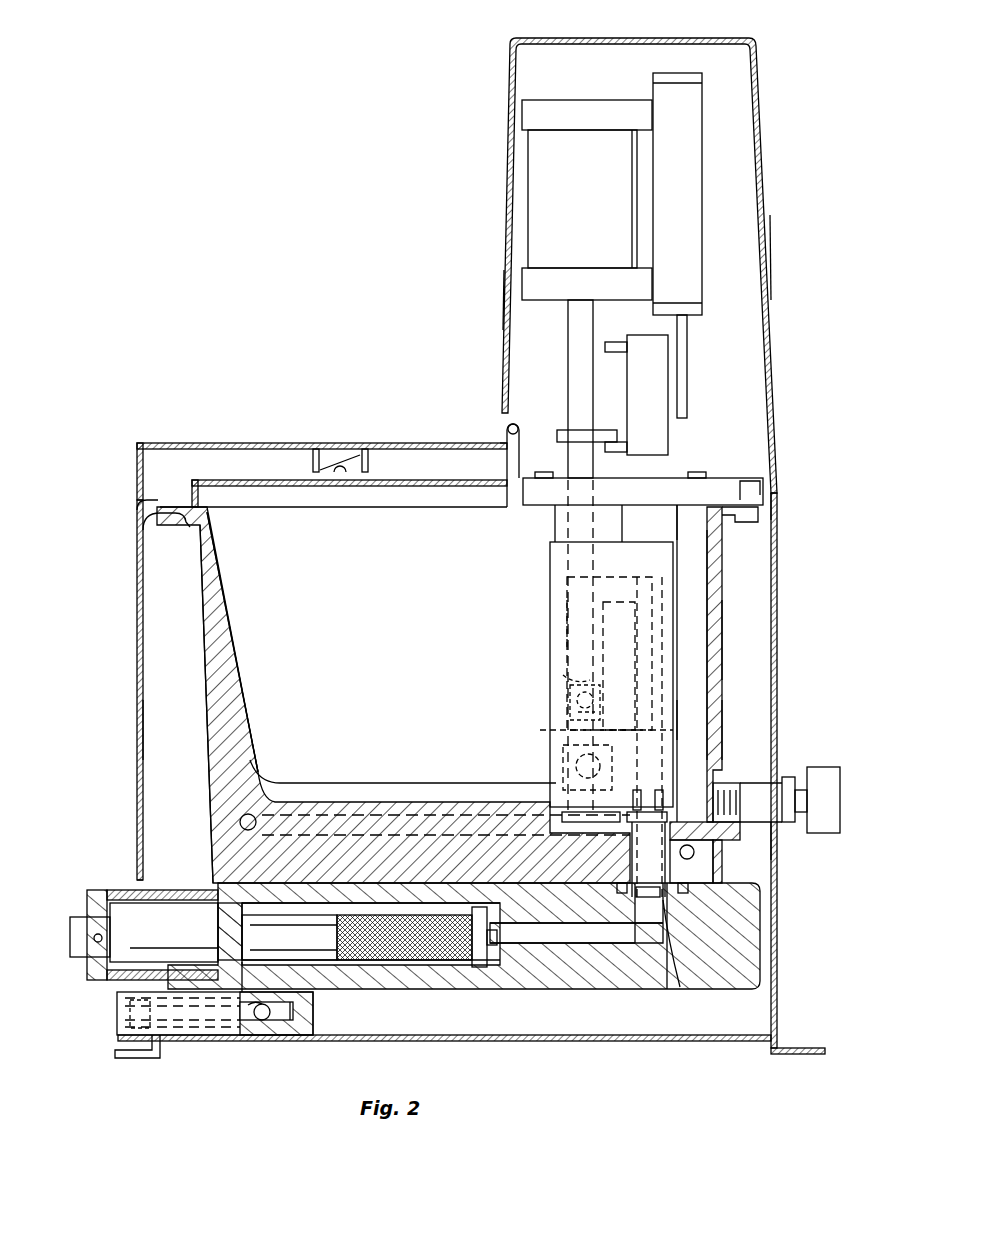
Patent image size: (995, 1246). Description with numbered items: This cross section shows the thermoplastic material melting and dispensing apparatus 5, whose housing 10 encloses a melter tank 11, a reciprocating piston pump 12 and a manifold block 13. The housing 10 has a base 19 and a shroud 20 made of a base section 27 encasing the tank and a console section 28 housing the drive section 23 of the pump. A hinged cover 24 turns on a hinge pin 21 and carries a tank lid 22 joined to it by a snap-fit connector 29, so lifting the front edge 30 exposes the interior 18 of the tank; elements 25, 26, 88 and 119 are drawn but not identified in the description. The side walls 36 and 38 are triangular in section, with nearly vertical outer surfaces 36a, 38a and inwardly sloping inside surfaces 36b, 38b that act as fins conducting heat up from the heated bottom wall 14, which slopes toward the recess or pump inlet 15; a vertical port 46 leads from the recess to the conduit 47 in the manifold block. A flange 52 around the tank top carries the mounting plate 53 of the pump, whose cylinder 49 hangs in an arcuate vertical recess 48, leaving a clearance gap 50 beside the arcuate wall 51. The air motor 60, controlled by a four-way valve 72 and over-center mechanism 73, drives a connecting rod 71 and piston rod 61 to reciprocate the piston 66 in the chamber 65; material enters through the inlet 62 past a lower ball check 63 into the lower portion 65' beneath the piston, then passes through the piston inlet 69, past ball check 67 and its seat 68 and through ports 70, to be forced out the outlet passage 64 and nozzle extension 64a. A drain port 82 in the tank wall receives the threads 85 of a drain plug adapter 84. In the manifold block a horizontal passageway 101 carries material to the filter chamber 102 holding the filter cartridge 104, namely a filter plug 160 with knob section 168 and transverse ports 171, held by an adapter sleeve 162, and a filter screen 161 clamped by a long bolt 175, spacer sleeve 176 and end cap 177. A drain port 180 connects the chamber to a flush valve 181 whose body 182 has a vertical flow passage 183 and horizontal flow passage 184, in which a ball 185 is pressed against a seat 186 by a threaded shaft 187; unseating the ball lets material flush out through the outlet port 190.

The thermoplastic material melting and dispensing apparatus 5 is at (222, 276).
The housing 10 is at (136, 607).
The melter tank 11 is at (196, 759).
The reciprocating piston pump 12 is at (515, 674).
The manifold block 13 is at (581, 990).
The bottom wall 14 is at (398, 802).
The pump inlet recess 15 is at (75, 972).
The tank interior 18 is at (406, 621).
The base 19 is at (588, 1042).
The shroud 20 is at (787, 473).
The hinge pin 21 is at (514, 422).
The tank lid 22 is at (420, 508).
The drive section 23 is at (632, 62).
The hinged cover 24 is at (258, 442).
The latch 25 is at (503, 425).
The hood front wall 26 is at (503, 275).
The base section 27 is at (778, 582).
The console section 28 is at (770, 216).
The snap-fit connector 29 is at (348, 460).
The front edge 30 is at (137, 462).
The side wall 36 is at (227, 673).
The outer surface 36a is at (203, 705).
The inside surface 36b is at (245, 679).
The side wall 38 is at (730, 549).
The outer surface 38a is at (727, 627).
The inside surface 38b is at (672, 530).
The vertical port 46 is at (672, 871).
The conduit 47 is at (683, 979).
The vertical recess 48 is at (716, 707).
The cylinder 49 is at (550, 599).
The clearance gap 50 is at (690, 692).
The arcuate vertical wall 51 is at (713, 722).
The flange 52 is at (150, 530).
The mounting plate 53 is at (705, 482).
The air motor 60 is at (594, 206).
The piston rod 61 is at (556, 526).
The pump inlet 62 is at (585, 812).
The ball check 63 is at (563, 768).
The outlet passage 64 is at (655, 574).
The nozzle extension 64a is at (653, 935).
The chamber 65 is at (532, 625).
The lower chamber portion 65' is at (589, 731).
The piston 66 is at (568, 702).
The ball check 67 is at (606, 686).
The seat 68 is at (607, 714).
The piston inlet 69 is at (680, 720).
The ports 70 is at (563, 676).
The connecting rod 71 is at (580, 343).
The four-way valve 72 is at (690, 197).
The over-center mechanism 73 is at (655, 383).
The drain port 82 is at (721, 784).
The drain plug adapter 84 is at (760, 788).
The threads 85 is at (773, 845).
The cap 88 is at (820, 782).
The horizontal passageway 101 is at (603, 934).
The filter chamber 102 is at (357, 976).
The filter cartridge 104 is at (413, 967).
The gasket 119 is at (553, 469).
The filter plug 160 is at (202, 890).
The filter screen 161 is at (404, 937).
The adapter sleeve 162 is at (160, 880).
The knob section 168 is at (97, 888).
The transverse ports 171 is at (182, 909).
The long bolt 175 is at (493, 938).
The spacer sleeve 176 is at (294, 937).
The end cap 177 is at (533, 970).
The drain port 180 is at (293, 978).
The flush valve 181 is at (215, 1047).
The flush valve body 182 is at (302, 1040).
The vertical flow passage 183 is at (293, 1012).
The horizontal flow passage 184 is at (193, 1023).
The ball 185 is at (255, 1038).
The seat 186 is at (266, 1040).
The threaded shaft 187 is at (243, 1040).
The outlet port 190 is at (125, 1042).